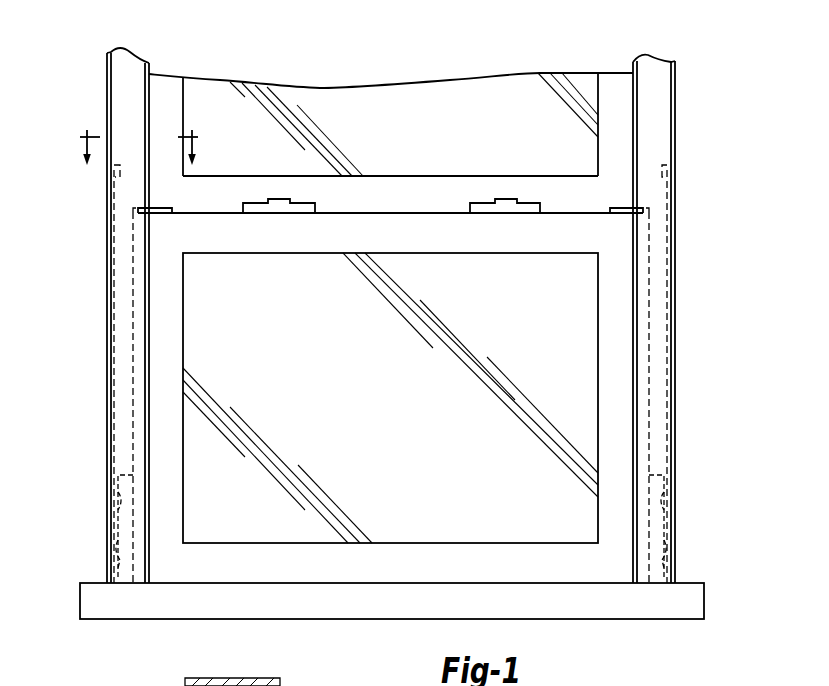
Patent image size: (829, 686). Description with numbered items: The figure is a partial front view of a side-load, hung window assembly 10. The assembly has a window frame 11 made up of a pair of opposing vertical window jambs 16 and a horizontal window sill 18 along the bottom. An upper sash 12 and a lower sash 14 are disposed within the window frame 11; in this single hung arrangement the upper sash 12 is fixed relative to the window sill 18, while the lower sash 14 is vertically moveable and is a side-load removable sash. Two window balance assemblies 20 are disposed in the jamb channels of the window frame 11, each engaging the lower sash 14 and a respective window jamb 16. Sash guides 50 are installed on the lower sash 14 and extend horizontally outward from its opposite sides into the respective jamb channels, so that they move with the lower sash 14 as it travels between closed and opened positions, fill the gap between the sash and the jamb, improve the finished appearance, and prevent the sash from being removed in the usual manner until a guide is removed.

The side-load, hung window assembly 10 is at (378, 340).
The window frame 11 is at (634, 134).
The upper sash 12 is at (676, 319).
The lower sash 14 is at (602, 566).
The window jamb 16 is at (104, 338).
The window sill 18 is at (660, 597).
The window balance assembly 20 is at (110, 512).
The sash guide 50 is at (124, 205).